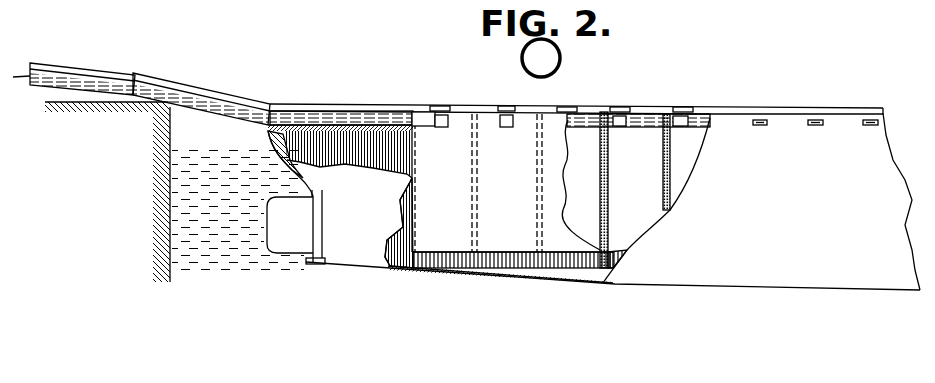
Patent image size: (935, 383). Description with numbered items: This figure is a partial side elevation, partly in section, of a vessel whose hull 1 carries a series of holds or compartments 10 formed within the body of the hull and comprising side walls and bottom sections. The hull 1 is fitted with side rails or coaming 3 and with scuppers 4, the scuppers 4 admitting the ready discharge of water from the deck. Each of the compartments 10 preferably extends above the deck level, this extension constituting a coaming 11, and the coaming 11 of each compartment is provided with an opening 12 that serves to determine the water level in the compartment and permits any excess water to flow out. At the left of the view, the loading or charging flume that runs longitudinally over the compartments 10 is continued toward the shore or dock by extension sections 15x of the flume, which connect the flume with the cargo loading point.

The hull 1 is at (490, 288).
The side rails or coaming 3 is at (379, 94).
The scuppers 4 is at (815, 127).
The holds or compartments 10 is at (623, 190).
The coaming 11 is at (422, 117).
The opening 12 is at (448, 126).
The extension sections of the flume 15x is at (98, 70).